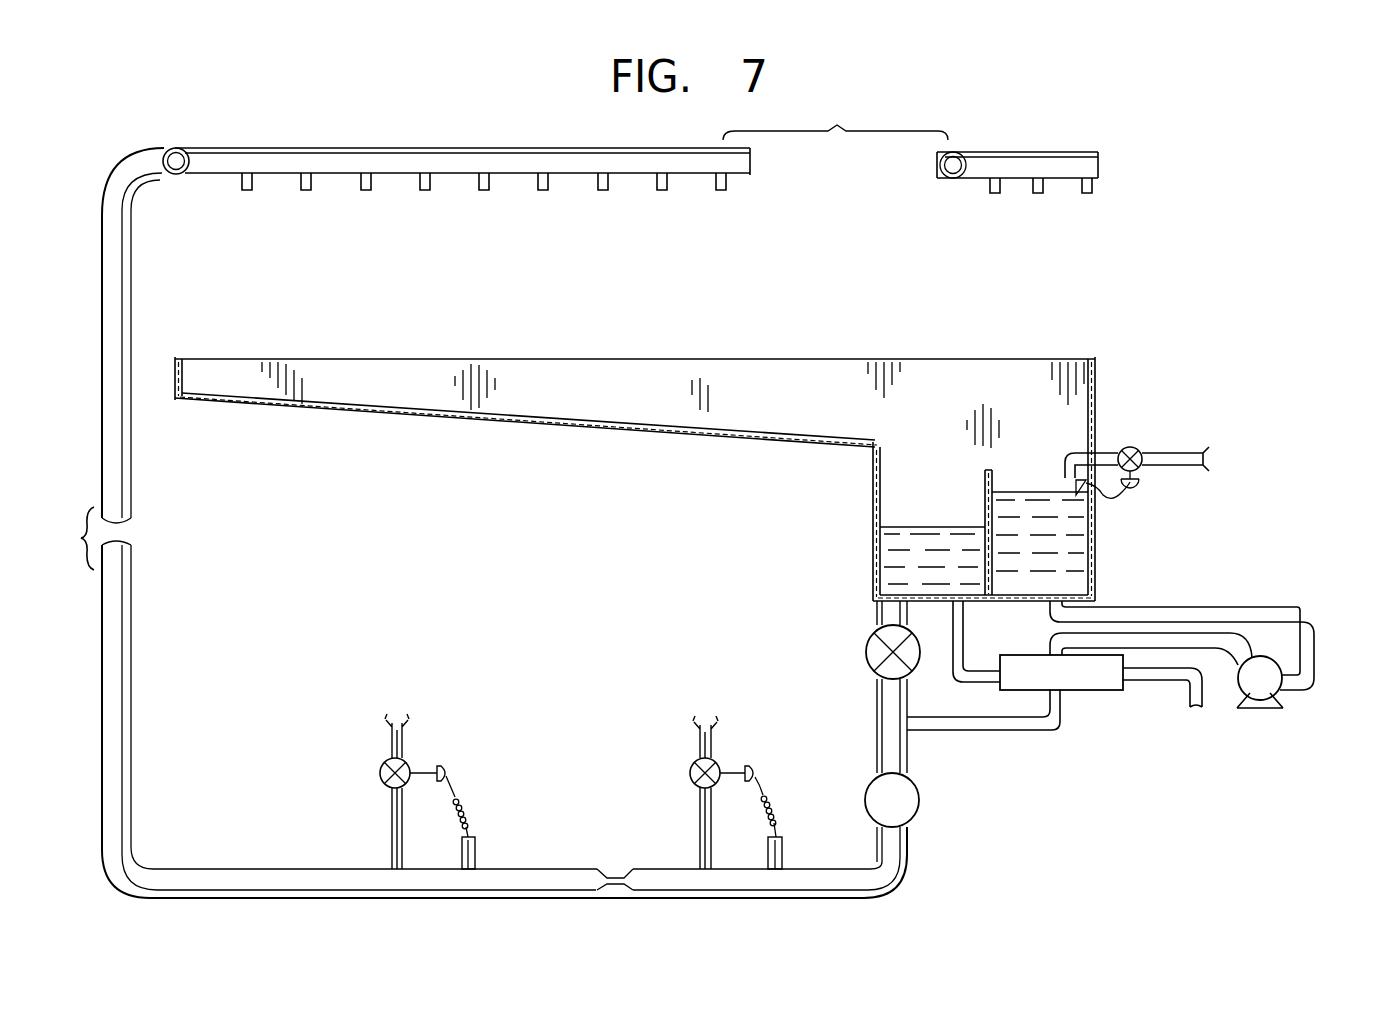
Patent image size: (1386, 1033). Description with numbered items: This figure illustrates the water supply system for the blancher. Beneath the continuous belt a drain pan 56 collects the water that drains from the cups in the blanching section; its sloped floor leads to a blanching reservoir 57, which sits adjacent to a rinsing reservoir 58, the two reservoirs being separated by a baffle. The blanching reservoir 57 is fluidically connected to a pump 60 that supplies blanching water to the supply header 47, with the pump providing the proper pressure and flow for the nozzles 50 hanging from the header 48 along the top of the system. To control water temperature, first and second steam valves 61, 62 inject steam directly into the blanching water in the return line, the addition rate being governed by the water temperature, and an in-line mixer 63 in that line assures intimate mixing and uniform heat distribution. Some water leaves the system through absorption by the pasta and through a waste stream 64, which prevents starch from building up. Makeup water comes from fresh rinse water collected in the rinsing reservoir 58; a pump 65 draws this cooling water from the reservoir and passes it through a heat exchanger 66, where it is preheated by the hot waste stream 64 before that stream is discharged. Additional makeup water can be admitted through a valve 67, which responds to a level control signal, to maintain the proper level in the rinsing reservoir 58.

The supply header 47 is at (176, 150).
The spray header pipe 48 is at (371, 153).
The nozzles 50 is at (432, 190).
The drain pan 56 is at (528, 368).
The blanching reservoir 57 is at (931, 487).
The rinsing reservoir 58 is at (1015, 466).
The pump 60 is at (903, 802).
The first steam valve 61 is at (690, 772).
The second steam valve 62 is at (385, 765).
The in-line mixer 63 is at (612, 875).
The waste stream 64 is at (1193, 697).
The pump 65 is at (1277, 685).
The heat exchanger 66 is at (1080, 675).
The valve 67 is at (1130, 446).